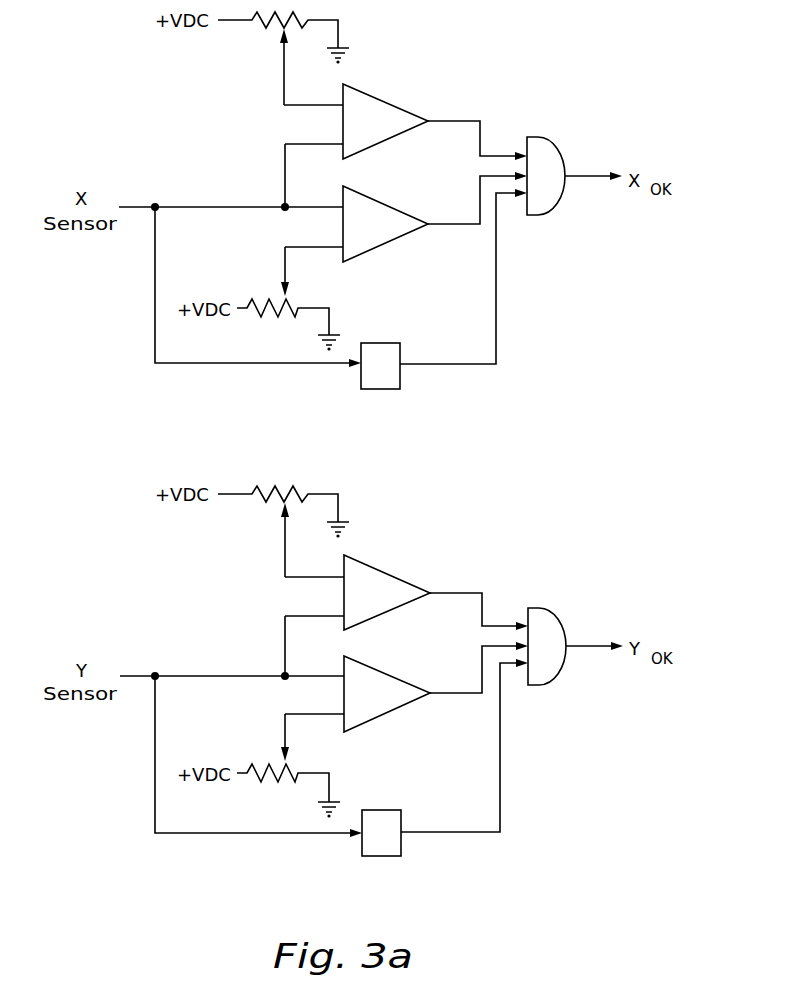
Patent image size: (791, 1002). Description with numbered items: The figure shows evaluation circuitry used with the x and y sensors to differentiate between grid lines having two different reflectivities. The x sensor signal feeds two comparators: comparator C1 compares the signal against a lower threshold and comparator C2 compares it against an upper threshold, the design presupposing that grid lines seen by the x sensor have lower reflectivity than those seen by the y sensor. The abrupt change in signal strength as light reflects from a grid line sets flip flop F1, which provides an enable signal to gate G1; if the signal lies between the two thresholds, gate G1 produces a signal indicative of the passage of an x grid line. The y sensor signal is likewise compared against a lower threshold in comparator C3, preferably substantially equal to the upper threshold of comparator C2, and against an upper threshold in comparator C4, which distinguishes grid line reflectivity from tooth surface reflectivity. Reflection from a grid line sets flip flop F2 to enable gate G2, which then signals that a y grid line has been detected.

The comparator C1 is at (376, 146).
The comparator C2 is at (402, 208).
The comparator C3 is at (377, 616).
The comparator C4 is at (402, 678).
The gate G1 is at (553, 145).
The gate G2 is at (553, 616).
The flip flop F1 is at (400, 383).
The flip flop F2 is at (402, 852).